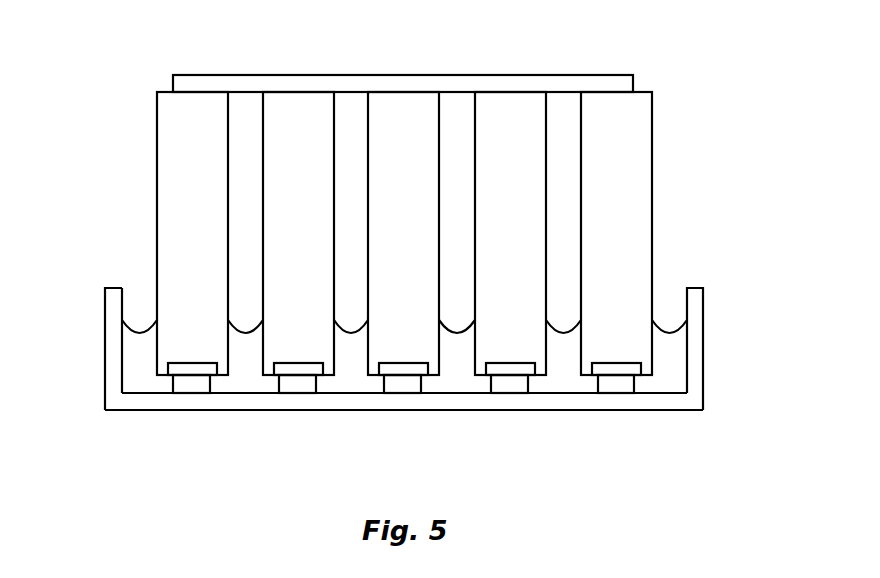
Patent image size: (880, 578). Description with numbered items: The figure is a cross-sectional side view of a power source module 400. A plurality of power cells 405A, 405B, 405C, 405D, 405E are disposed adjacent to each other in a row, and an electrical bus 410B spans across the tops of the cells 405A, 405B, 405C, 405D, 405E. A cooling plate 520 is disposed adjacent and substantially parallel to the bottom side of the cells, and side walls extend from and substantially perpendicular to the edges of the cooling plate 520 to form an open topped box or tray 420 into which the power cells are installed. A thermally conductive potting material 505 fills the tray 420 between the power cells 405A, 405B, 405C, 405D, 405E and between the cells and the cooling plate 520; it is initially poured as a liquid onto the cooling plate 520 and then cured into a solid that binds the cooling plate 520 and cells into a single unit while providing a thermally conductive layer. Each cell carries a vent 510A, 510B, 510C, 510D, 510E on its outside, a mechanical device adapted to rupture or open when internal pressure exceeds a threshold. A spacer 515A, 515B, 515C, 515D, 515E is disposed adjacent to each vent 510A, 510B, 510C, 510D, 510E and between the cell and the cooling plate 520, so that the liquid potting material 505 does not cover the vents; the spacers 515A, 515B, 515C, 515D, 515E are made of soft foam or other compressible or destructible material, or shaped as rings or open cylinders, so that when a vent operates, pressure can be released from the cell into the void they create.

The power source module 400 is at (706, 75).
The electrical bus 410B is at (187, 80).
The power cell 405A is at (192, 233).
The power cell 405B is at (298, 233).
The power cell 405C is at (403, 233).
The power cell 405D is at (510, 233).
The power cell 405E is at (616, 233).
The open topped box or tray 420 is at (710, 345).
The thermally conductive potting material 505 is at (138, 355).
The vent 510A is at (172, 371).
The vent 510B is at (277, 371).
The vent 510C is at (384, 371).
The vent 510D is at (488, 371).
The vent 510E is at (596, 371).
The spacer 515A is at (192, 386).
The spacer 515B is at (299, 386).
The spacer 515C is at (405, 386).
The spacer 515D is at (511, 386).
The spacer 515E is at (616, 386).
The cooling plate 520 is at (653, 403).